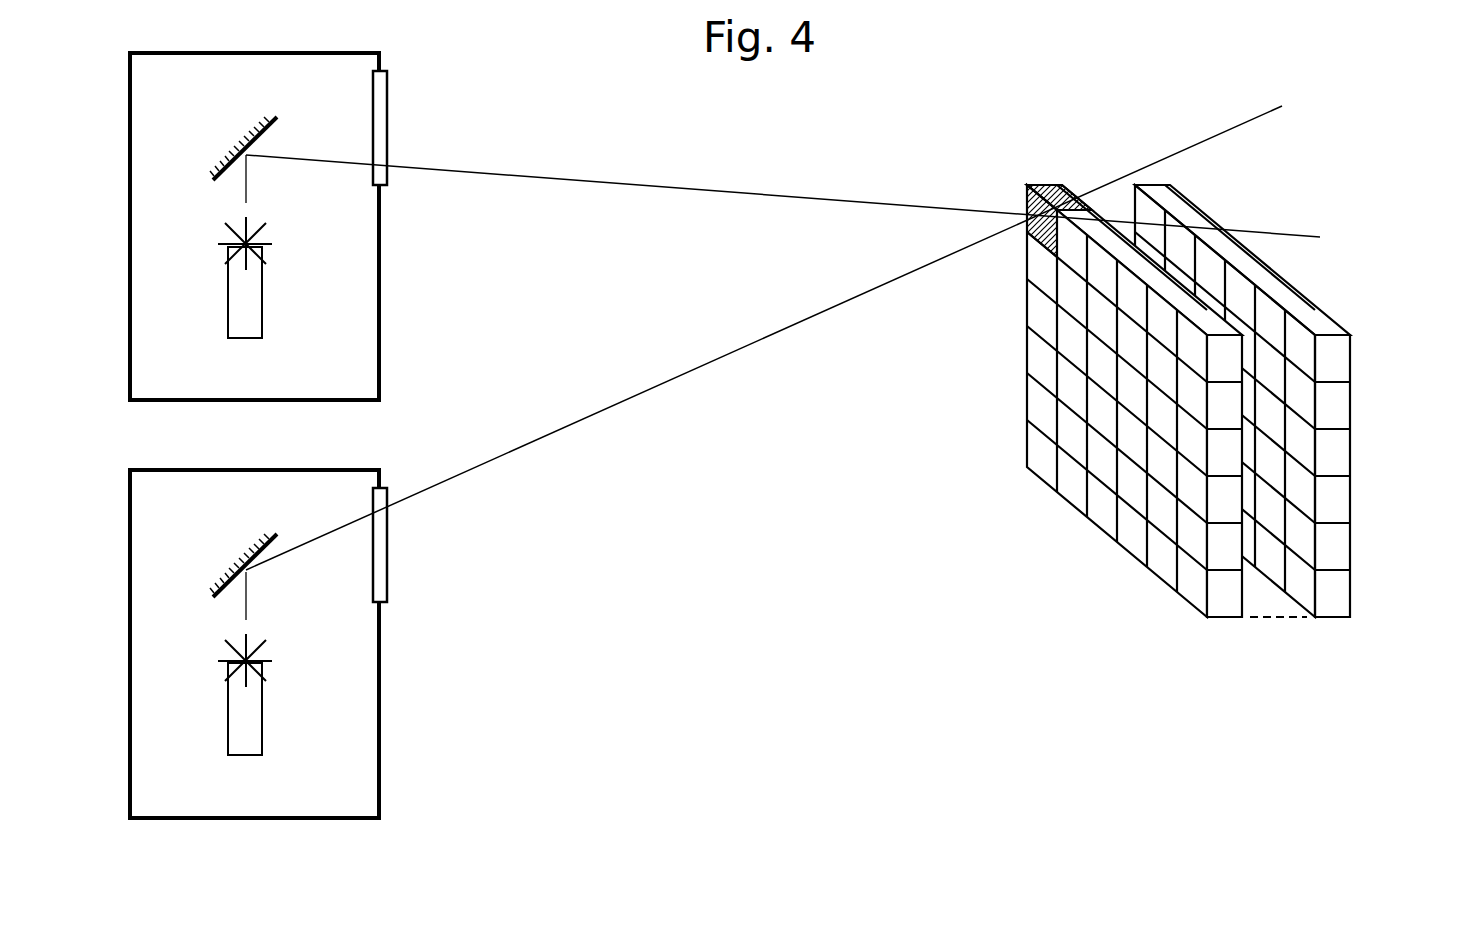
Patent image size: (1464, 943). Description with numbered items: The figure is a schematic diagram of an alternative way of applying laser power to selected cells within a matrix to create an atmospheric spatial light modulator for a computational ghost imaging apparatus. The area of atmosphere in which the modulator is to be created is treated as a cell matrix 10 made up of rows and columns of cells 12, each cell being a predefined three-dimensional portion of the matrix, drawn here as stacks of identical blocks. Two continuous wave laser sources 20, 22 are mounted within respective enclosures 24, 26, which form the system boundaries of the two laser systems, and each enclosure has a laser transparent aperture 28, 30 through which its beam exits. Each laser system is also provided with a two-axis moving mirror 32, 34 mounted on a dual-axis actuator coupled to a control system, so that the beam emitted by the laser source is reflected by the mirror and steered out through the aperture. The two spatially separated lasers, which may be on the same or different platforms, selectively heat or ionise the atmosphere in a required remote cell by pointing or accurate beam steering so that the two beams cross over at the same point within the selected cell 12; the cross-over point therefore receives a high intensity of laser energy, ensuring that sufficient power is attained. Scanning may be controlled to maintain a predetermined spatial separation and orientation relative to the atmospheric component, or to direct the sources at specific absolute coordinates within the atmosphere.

The cell matrix 10 is at (1348, 305).
The cell 12 is at (1035, 240).
The CW laser source 20 is at (252, 299).
The CW laser source 22 is at (252, 717).
The enclosure 24 is at (381, 318).
The enclosure 26 is at (381, 733).
The laser transparent aperture 28 is at (383, 173).
The laser transparent aperture 30 is at (383, 538).
The mirror 32 is at (222, 182).
The mirror 34 is at (222, 599).